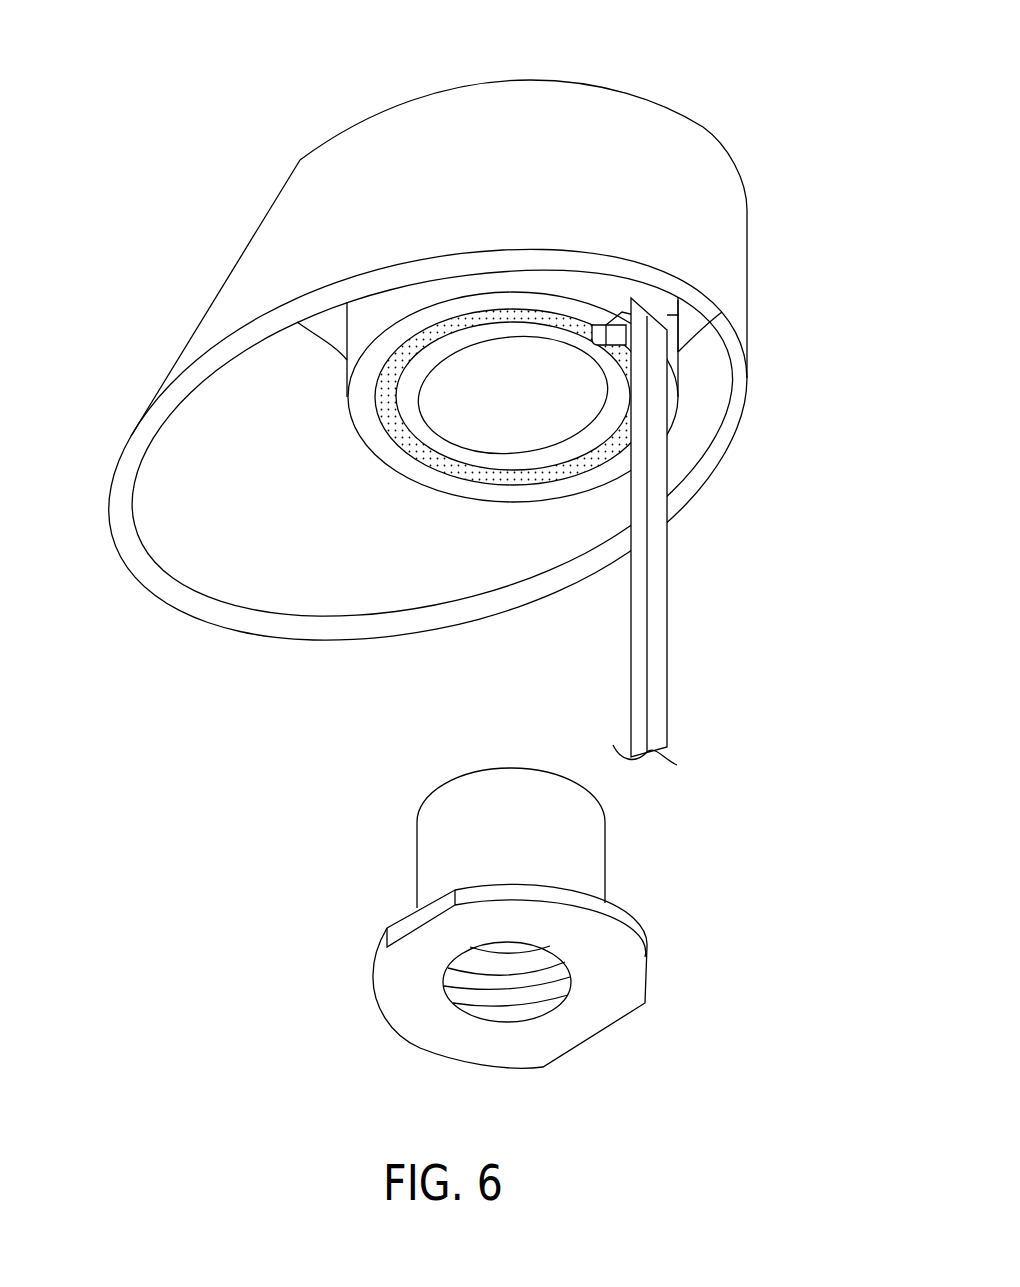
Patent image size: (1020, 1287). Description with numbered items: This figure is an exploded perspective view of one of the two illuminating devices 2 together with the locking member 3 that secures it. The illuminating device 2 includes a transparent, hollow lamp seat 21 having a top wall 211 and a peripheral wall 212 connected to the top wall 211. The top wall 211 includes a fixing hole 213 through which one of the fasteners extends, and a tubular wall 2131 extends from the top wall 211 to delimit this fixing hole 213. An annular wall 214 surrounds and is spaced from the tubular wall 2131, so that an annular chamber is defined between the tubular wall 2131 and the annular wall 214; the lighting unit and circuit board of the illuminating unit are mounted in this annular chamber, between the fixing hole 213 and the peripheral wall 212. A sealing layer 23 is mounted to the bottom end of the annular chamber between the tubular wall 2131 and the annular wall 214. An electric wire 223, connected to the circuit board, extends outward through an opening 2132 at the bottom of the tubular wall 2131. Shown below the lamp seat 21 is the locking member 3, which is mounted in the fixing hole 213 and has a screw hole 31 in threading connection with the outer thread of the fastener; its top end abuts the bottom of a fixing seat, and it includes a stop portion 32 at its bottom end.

The illuminating device 2 is at (292, 122).
The lamp seat 21 is at (230, 264).
The top wall 211 is at (617, 87).
The peripheral wall 212 is at (717, 213).
The fixing hole 213 is at (514, 416).
The tubular wall 2131 is at (453, 450).
The opening 2132 is at (677, 302).
The annular wall 214 is at (362, 422).
The sealing layer 23 is at (407, 450).
The electric wire 223 is at (657, 625).
The locking member 3 is at (563, 840).
The screw hole 31 is at (533, 987).
The stop portion 32 is at (388, 1027).